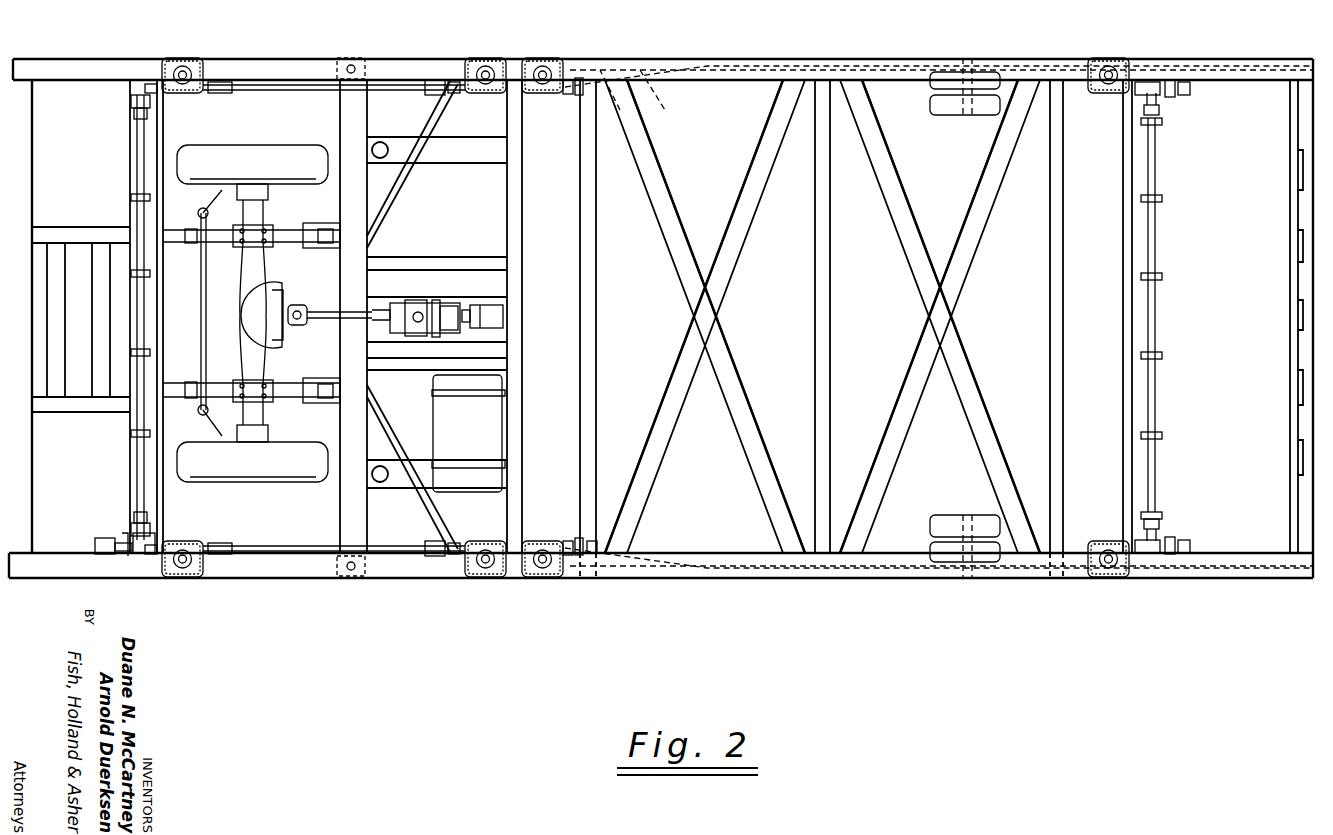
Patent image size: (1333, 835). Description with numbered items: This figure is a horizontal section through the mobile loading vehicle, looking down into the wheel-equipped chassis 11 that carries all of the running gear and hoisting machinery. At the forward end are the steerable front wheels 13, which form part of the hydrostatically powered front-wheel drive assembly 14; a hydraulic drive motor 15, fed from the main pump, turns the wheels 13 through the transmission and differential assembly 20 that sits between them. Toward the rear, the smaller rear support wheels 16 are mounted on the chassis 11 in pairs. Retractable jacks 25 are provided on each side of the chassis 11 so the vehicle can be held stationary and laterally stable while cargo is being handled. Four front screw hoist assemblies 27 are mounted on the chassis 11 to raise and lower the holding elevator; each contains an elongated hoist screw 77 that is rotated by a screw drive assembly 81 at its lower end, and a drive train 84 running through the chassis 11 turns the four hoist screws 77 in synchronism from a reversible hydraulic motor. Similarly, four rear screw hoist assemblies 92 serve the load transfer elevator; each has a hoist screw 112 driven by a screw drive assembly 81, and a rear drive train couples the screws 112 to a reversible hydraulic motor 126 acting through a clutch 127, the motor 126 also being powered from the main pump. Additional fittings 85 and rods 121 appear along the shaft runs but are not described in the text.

The chassis 11 is at (822, 580).
The steerable front wheels 13 is at (275, 160).
The front-wheel drive assembly 14 is at (283, 295).
The drive motor 15 is at (488, 306).
The rear support wheels 16 is at (930, 80).
The transmission and differential assembly 20 is at (382, 310).
The retractable jacks 25 is at (370, 58).
The screw hoist assemblies 27 is at (200, 55).
The hoist screw 77 is at (180, 546).
The screw drive assembly 81 is at (186, 92).
The drive train 84 is at (298, 546).
The coupling fitting 85 is at (95, 548).
The screw hoist assemblies 92 is at (548, 55).
The hoist screw 112 is at (565, 541).
The drive rods 121 is at (745, 60).
The reversible hydraulic motor 126 is at (1182, 538).
The clutch 127 is at (1176, 95).